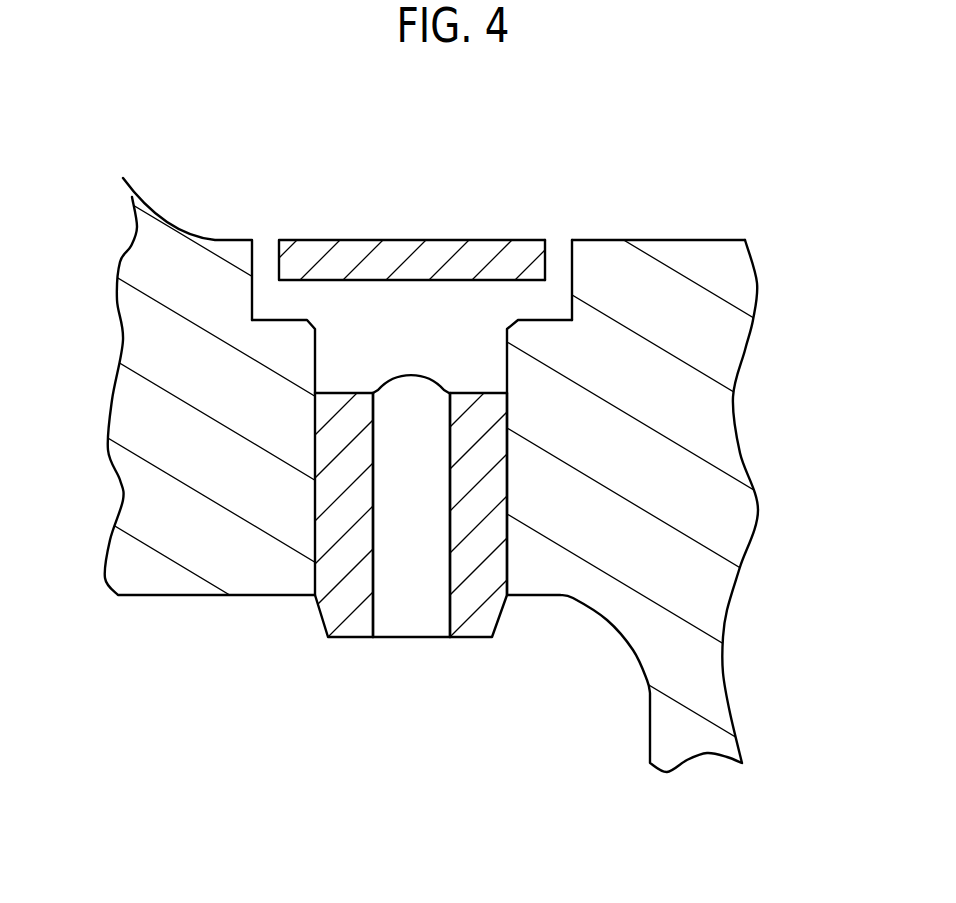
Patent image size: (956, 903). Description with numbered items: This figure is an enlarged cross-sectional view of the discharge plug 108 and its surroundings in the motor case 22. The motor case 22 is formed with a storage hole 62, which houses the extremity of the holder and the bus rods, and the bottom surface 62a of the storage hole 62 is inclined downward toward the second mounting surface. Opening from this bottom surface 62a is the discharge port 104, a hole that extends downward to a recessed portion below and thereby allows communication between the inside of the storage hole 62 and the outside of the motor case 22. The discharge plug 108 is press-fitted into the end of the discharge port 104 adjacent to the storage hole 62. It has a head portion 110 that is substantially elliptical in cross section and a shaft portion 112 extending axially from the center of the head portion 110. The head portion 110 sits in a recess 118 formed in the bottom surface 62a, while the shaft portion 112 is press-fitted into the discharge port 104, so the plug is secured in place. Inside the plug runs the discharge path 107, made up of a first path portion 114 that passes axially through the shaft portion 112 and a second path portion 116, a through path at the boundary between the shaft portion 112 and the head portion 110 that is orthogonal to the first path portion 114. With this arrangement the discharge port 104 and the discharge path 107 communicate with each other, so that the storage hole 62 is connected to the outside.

The motor case 22 is at (758, 517).
The storage hole 62 is at (197, 203).
The bottom surface of the storage hole 62a is at (713, 240).
The discharge port 104 is at (315, 530).
The discharge path 107 is at (340, 356).
The discharge plug 108 is at (356, 230).
The head portion 110 is at (430, 250).
The shaft portion 112 is at (478, 548).
The first path portion 114 is at (413, 607).
The second path portion 116 is at (422, 347).
The recess 118 is at (570, 265).